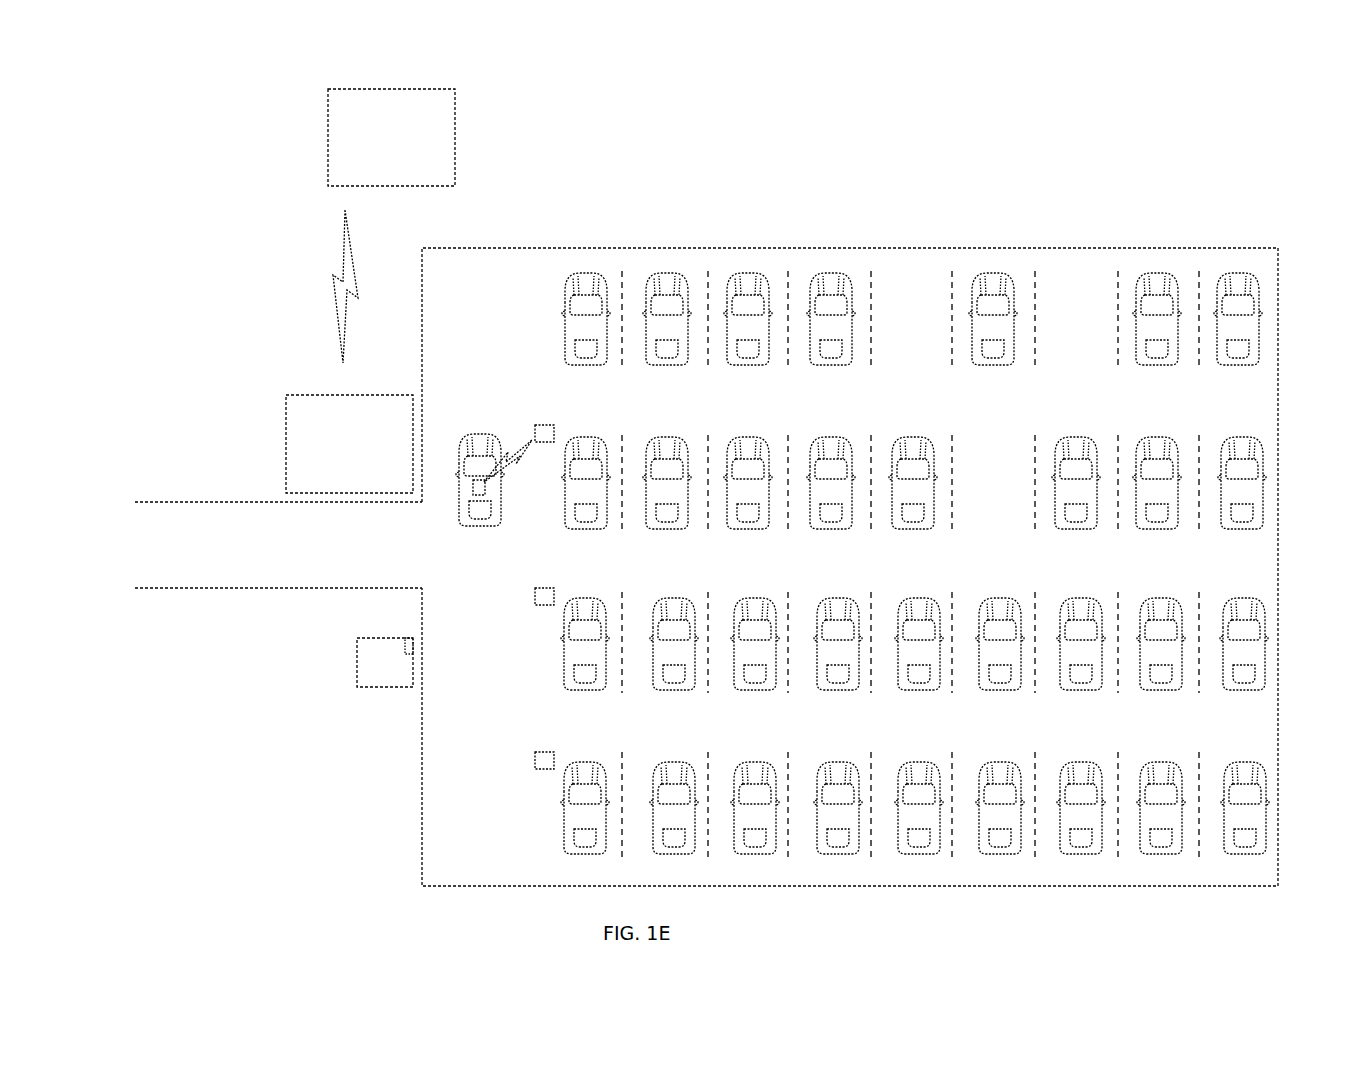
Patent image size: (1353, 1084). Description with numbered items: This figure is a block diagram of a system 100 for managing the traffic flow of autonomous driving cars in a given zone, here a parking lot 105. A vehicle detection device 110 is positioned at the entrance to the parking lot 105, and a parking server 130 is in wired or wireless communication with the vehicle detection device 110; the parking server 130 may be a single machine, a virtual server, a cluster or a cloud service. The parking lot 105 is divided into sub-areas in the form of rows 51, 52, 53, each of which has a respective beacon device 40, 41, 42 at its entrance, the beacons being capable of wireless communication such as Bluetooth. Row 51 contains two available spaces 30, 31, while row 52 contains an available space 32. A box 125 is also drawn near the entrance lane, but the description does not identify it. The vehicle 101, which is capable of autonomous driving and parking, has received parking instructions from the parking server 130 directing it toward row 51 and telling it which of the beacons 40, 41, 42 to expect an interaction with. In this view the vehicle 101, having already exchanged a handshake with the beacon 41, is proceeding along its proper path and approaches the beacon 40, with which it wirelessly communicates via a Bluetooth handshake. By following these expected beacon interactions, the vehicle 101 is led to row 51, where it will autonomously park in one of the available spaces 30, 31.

The system 100 is at (988, 98).
The vehicle 101 is at (122, 533).
The parking lot 105 is at (1224, 241).
The vehicle detection device 110 is at (285, 443).
The entrance gate / sensor box 125 is at (375, 670).
The parking server 130 is at (328, 138).
The available space 30 is at (895, 290).
The available space 31 is at (1078, 292).
The available space 32 is at (990, 465).
The beacon device 40 is at (533, 423).
The beacon device 41 is at (533, 586).
The beacon device 42 is at (533, 750).
The row 51 is at (1248, 388).
The row 52 is at (1248, 561).
The row 53 is at (1248, 720).